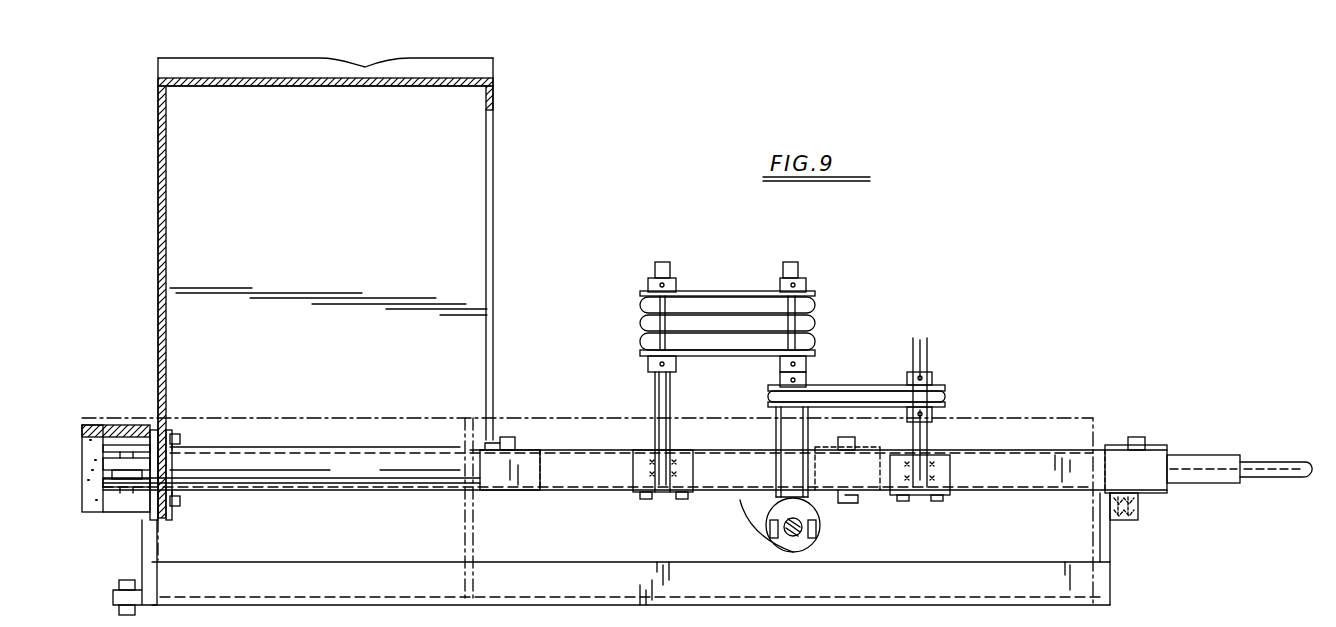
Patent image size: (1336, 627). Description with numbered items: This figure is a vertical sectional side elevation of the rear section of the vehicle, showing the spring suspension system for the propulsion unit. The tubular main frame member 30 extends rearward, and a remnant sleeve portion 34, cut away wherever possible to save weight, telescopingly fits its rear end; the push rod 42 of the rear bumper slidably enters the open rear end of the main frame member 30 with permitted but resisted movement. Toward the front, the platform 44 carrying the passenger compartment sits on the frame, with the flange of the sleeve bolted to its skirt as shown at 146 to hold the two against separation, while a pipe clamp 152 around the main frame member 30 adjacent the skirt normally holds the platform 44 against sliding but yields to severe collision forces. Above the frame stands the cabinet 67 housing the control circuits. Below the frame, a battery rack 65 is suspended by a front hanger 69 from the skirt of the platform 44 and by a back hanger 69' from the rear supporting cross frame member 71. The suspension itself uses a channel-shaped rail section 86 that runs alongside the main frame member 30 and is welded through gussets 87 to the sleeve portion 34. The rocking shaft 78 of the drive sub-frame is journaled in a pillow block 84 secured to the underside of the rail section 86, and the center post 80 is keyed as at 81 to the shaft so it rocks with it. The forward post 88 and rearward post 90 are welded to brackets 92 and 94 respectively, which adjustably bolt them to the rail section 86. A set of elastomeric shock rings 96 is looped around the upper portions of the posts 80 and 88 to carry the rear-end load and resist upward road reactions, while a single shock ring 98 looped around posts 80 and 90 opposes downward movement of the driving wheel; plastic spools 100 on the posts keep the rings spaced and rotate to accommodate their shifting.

The main frame member 30 is at (1208, 482).
The remnant sleeve portion 34 is at (386, 458).
The push rod 42 is at (1273, 478).
The platform 44 is at (118, 424).
The battery rack 65 is at (385, 568).
The cabinet 67 is at (325, 288).
The front hanger 69 is at (123, 567).
The back hanger 69' is at (1134, 549).
The rear supporting cross frame member 71 is at (1138, 510).
The rocking shaft 78 is at (805, 530).
The center post 80 is at (775, 428).
The key 81 is at (840, 504).
The pillow block 84 is at (766, 510).
The channel-shaped rail section 86 is at (566, 480).
The gusset 87 is at (518, 437).
The forward post 88 is at (654, 393).
The rearward post 90 is at (928, 357).
The bracket 92 is at (640, 480).
The bracket 94 is at (945, 480).
The elastomeric shock rings 96 is at (730, 345).
The shock ring 98 is at (862, 396).
The plastic spool 100 is at (640, 326).
The bolt 146 is at (181, 437).
The pipe clamp 152 is at (128, 487).